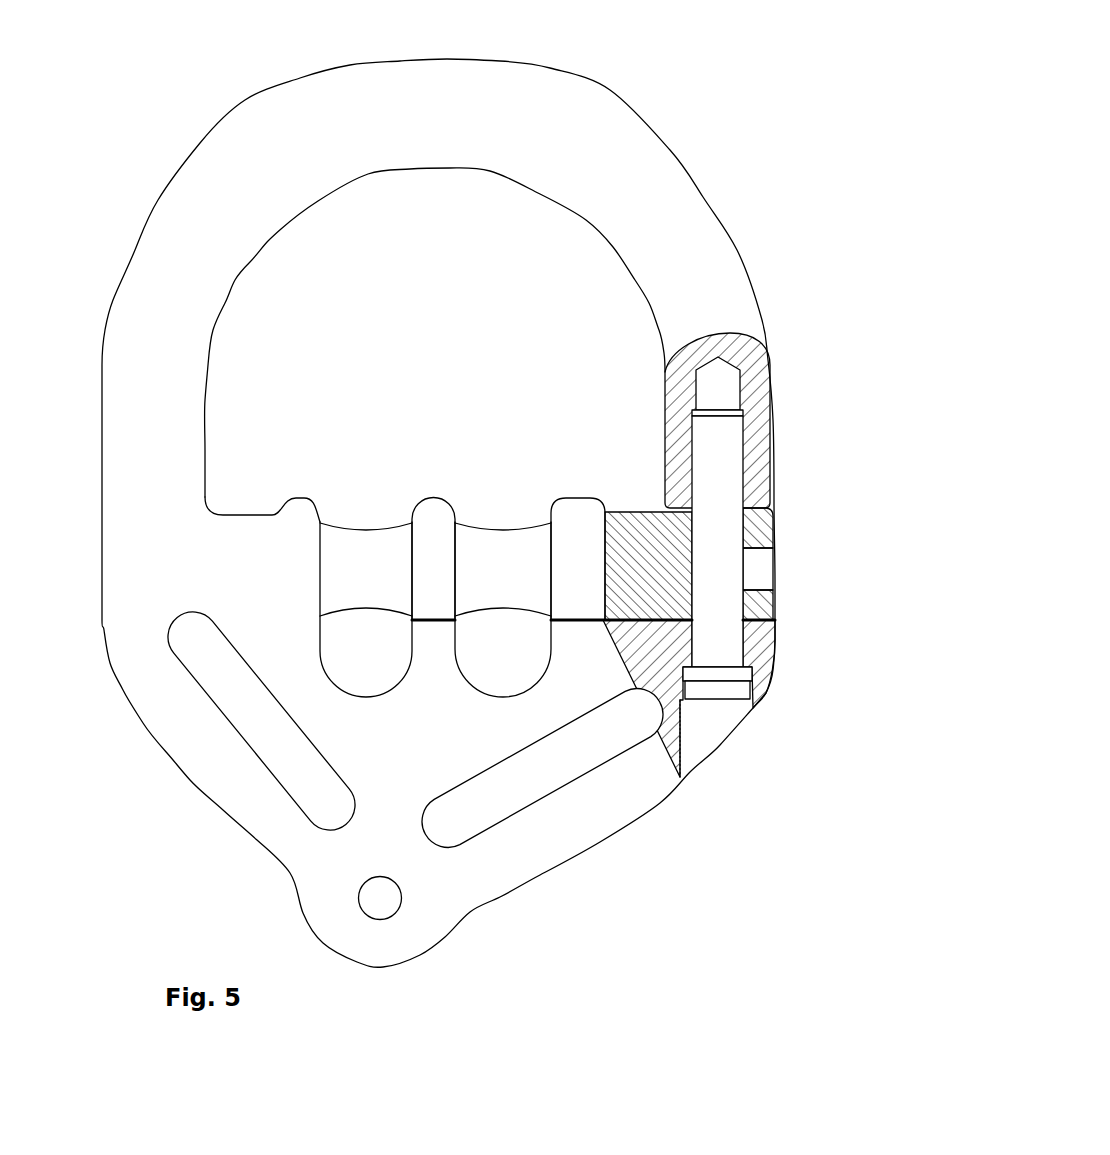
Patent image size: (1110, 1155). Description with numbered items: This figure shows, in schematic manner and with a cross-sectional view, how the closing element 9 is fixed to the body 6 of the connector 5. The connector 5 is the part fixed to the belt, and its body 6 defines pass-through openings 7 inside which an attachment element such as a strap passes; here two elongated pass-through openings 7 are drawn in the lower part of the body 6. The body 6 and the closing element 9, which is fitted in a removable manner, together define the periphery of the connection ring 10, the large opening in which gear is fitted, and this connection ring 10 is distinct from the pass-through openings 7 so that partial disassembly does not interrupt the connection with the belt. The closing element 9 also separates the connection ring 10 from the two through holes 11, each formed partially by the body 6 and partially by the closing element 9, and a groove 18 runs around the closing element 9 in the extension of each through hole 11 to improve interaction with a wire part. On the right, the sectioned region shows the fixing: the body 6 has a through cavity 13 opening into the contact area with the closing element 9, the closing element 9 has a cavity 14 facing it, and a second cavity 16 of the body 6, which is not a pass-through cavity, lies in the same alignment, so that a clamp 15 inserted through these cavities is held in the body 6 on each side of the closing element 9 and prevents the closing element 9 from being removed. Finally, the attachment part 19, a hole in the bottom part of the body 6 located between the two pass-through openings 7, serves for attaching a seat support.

The connector 5 is at (461, 520).
The body 6 is at (705, 212).
The pass-through opening 7 is at (237, 713).
The closing element 9 is at (758, 608).
The connection ring 10 is at (535, 248).
The through hole 11 is at (512, 657).
The cavity 13 is at (736, 717).
The cavity 14 is at (752, 562).
The clamp 15 is at (718, 700).
The second cavity 16 is at (752, 405).
The groove 18 is at (357, 520).
The attachment part 19 is at (410, 908).